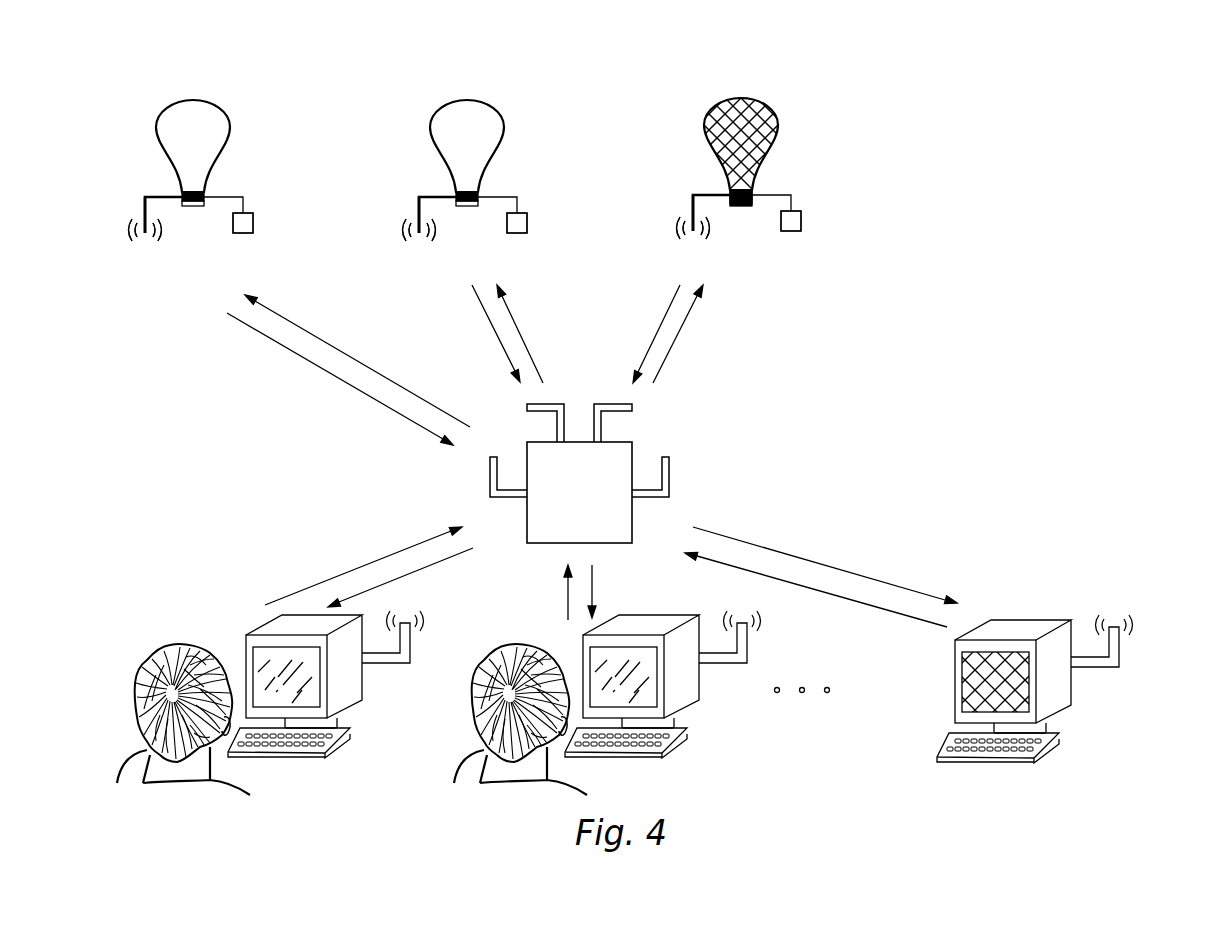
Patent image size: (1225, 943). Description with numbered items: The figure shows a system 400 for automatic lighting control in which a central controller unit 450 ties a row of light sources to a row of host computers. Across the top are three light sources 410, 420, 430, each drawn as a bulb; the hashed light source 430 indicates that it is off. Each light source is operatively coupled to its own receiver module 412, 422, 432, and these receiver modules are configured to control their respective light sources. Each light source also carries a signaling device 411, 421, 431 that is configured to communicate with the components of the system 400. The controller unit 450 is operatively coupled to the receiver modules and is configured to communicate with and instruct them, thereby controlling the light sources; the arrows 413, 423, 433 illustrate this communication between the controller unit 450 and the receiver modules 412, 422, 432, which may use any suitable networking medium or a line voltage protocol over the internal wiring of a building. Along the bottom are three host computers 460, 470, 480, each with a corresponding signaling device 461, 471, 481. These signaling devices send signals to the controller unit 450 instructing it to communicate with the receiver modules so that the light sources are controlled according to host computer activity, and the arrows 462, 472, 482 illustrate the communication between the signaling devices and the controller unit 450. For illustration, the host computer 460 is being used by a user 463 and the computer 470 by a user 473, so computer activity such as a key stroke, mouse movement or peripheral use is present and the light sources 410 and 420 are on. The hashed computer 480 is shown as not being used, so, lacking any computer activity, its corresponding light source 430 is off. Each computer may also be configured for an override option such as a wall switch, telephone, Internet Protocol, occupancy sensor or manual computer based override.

The system for automatic lighting control 400 is at (591, 62).
The light source 410 is at (155, 122).
The signaling device 411 is at (128, 238).
The receiver module 412 is at (242, 235).
The arrow 413 is at (308, 362).
The light source 420 is at (427, 122).
The signaling device 421 is at (399, 238).
The receiver module 422 is at (517, 235).
The arrow 423 is at (520, 337).
The light source 430 is at (699, 119).
The signaling device 431 is at (673, 235).
The receiver module 432 is at (791, 233).
The arrow 433 is at (680, 337).
The controller unit 450 is at (598, 506).
The host computer 460 is at (365, 685).
The signaling device 461 is at (413, 641).
The arrow 462 is at (363, 563).
The user 463 is at (132, 638).
The host computer 470 is at (702, 685).
The signaling device 471 is at (750, 641).
The arrow 472 is at (592, 585).
The user 473 is at (490, 801).
The host computer 480 is at (1078, 686).
The signaling device 481 is at (1131, 645).
The arrow 482 is at (813, 562).